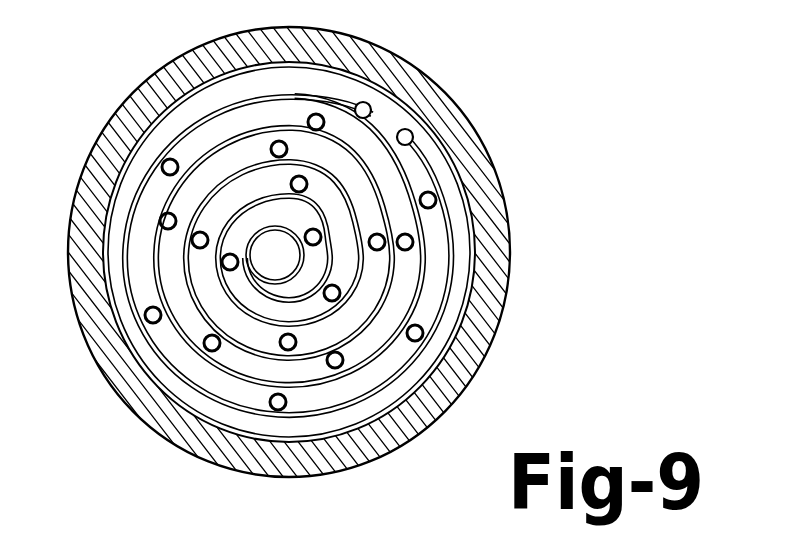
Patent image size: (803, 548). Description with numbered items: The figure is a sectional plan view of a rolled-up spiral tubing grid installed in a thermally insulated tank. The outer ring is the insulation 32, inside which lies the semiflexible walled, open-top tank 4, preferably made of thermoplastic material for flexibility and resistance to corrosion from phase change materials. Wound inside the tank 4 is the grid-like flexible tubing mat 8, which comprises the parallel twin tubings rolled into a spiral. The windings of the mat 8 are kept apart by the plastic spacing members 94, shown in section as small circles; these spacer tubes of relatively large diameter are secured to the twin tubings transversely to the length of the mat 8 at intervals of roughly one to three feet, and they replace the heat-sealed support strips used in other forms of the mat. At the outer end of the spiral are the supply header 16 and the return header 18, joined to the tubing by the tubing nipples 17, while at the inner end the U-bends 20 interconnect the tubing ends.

The tank 4 is at (196, 432).
The tubing mat 8 is at (445, 312).
The supply header 16 is at (413, 135).
The tubing nipples 17 is at (378, 115).
The return header 18 is at (366, 101).
The U-bends 20 is at (298, 270).
The insulation 32 is at (133, 394).
The spacing members 94 is at (146, 314).